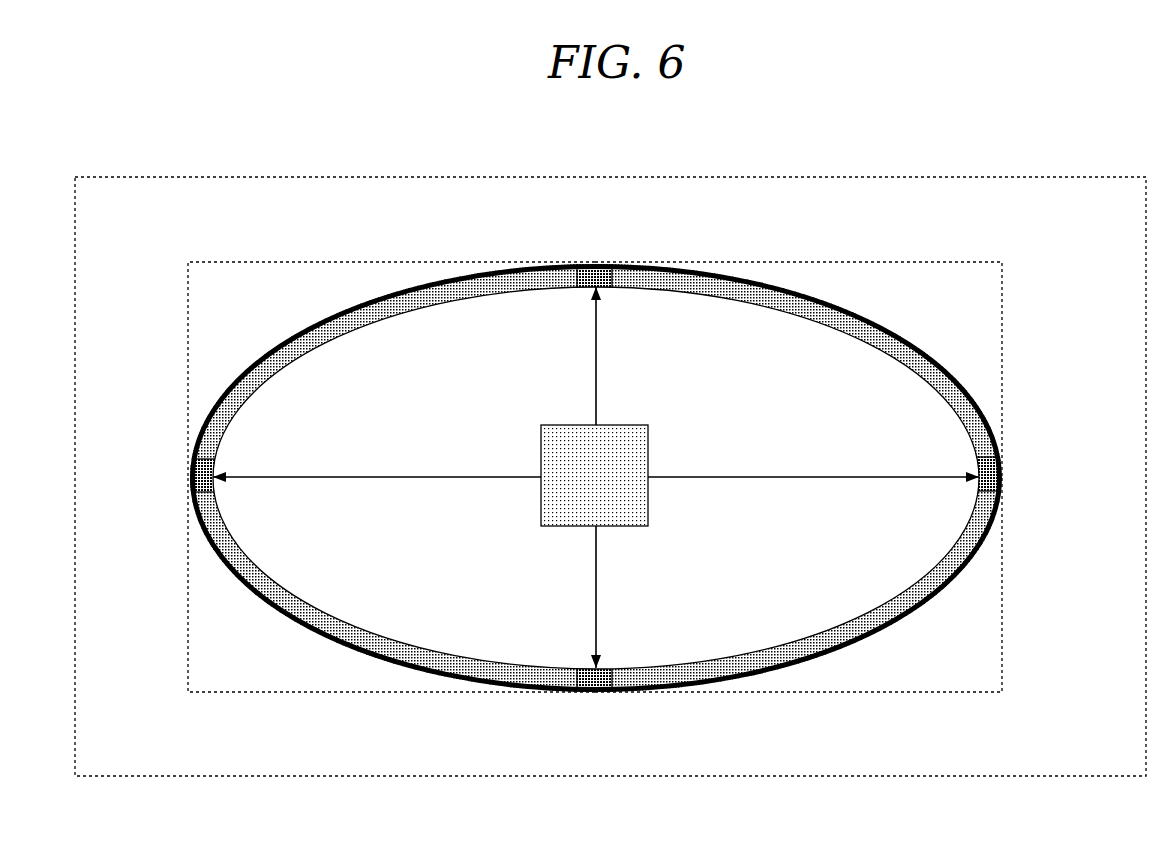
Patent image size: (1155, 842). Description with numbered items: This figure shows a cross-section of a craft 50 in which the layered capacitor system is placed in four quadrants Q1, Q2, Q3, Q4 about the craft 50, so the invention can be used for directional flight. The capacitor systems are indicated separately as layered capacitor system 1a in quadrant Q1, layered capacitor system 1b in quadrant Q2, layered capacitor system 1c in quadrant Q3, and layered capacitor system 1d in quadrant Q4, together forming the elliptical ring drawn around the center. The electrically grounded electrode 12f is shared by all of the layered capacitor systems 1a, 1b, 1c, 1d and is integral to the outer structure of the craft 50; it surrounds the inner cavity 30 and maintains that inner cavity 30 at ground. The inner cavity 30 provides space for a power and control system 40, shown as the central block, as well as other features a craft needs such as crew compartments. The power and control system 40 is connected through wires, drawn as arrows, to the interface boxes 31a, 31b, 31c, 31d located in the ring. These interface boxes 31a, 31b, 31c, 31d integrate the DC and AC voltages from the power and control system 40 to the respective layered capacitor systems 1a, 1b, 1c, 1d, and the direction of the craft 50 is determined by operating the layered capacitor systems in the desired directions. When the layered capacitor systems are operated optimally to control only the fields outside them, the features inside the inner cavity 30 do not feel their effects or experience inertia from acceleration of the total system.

The craft 50 is at (610, 177).
The inner cavity 30 is at (720, 297).
The power and control system 40 is at (628, 425).
The electrical grounded electrode 12f is at (222, 398).
The layered capacitor system 1a is at (320, 320).
The layered capacitor system 1b is at (323, 635).
The layered capacitor system 1c is at (872, 317).
The layered capacitor system 1d is at (870, 637).
The interface box 31a is at (190, 477).
The interface box 31b is at (595, 693).
The interface box 31c is at (597, 263).
The interface box 31d is at (1003, 477).
The quadrant Q1 is at (388, 262).
The quadrant Q2 is at (393, 692).
The quadrant Q3 is at (793, 262).
The quadrant Q4 is at (793, 692).